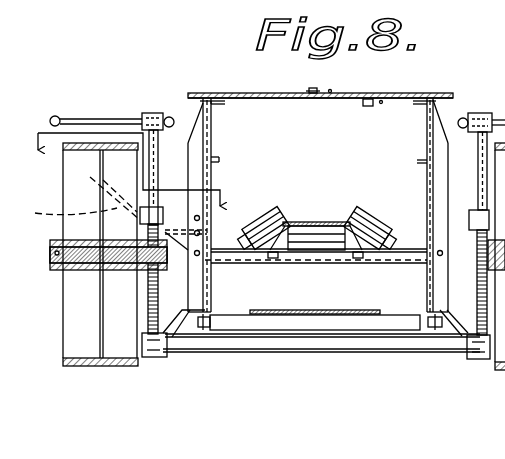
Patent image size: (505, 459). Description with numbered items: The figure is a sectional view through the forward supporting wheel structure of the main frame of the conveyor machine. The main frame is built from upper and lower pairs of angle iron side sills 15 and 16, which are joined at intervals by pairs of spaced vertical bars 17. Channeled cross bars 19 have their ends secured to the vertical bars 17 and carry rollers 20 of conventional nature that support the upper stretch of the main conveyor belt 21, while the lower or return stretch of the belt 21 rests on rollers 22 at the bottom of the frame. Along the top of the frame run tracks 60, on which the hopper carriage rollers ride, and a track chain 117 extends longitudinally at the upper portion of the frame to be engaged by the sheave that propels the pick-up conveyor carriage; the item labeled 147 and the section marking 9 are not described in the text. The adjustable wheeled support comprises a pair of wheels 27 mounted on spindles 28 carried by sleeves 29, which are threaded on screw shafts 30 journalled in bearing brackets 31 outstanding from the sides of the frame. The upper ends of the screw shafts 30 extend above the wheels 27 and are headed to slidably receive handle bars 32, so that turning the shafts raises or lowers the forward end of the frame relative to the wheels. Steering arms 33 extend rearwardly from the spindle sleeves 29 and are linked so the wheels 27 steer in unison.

The section line 9- 9 is at (125, 165).
The upper angle iron side sill 15 is at (193, 93).
The lower angle iron side sill 16 is at (206, 313).
The vertical bar 17 is at (204, 183).
The channeled cross bar 19 is at (394, 267).
The roller 20 is at (331, 237).
The main conveyor belt 21 is at (305, 222).
The roller 22 is at (357, 316).
The wheel 27 is at (70, 326).
The spindle 28 is at (50, 253).
The sleeve 29 is at (165, 258).
The screw shaft 30 is at (158, 318).
The bearing bracket 31 is at (211, 222).
The handle bar 32 is at (97, 118).
The steering arm 33 is at (80, 198).
The track 60 is at (222, 157).
The track chain 117 is at (305, 98).
The hanger bracket 147 is at (368, 100).